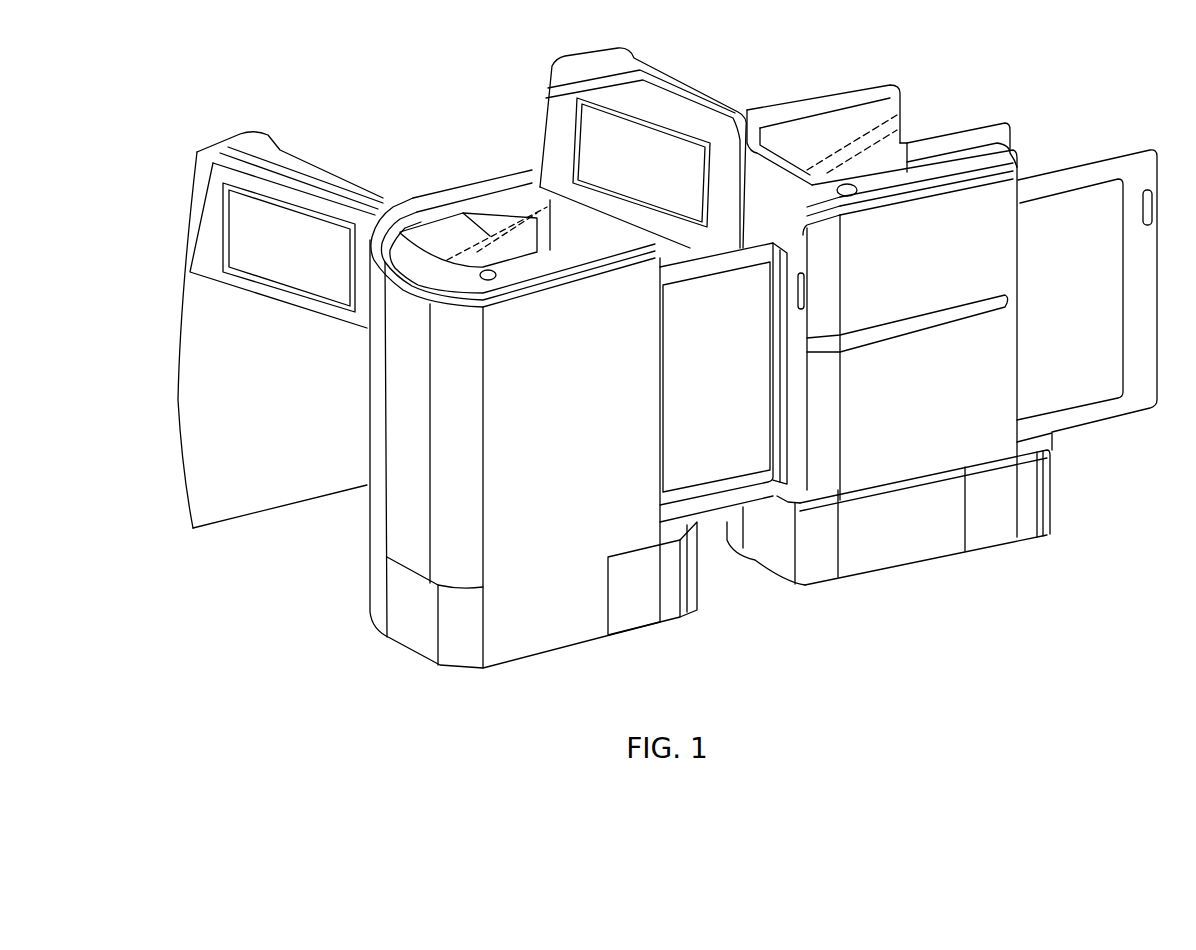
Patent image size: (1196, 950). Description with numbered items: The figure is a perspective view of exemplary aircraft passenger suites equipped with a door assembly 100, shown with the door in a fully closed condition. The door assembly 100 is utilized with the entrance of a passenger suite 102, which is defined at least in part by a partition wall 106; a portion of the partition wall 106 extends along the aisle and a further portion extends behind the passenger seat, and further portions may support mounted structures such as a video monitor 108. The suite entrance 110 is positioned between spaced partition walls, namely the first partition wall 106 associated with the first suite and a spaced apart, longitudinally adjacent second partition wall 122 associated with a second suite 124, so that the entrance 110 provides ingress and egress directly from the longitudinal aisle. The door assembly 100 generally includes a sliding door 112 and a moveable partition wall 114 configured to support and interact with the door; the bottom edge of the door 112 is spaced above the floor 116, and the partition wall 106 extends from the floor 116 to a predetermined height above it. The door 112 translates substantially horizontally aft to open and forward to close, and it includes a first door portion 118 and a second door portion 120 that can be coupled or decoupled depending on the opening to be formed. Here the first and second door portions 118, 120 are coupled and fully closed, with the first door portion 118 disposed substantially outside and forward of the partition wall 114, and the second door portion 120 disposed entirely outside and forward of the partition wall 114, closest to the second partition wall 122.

The door assembly 100 is at (664, 518).
The passenger suite 102 is at (449, 163).
The partition wall 106 is at (377, 547).
The video monitor 108 is at (283, 222).
The suite entrance 110 is at (724, 571).
The sliding door 112 is at (755, 520).
The moveable partition wall 114 is at (520, 633).
The floor 116 is at (711, 604).
The first door portion 118 is at (709, 295).
The second door portion 120 is at (798, 262).
The second partition wall 122 is at (830, 497).
The second suite 124 is at (958, 112).